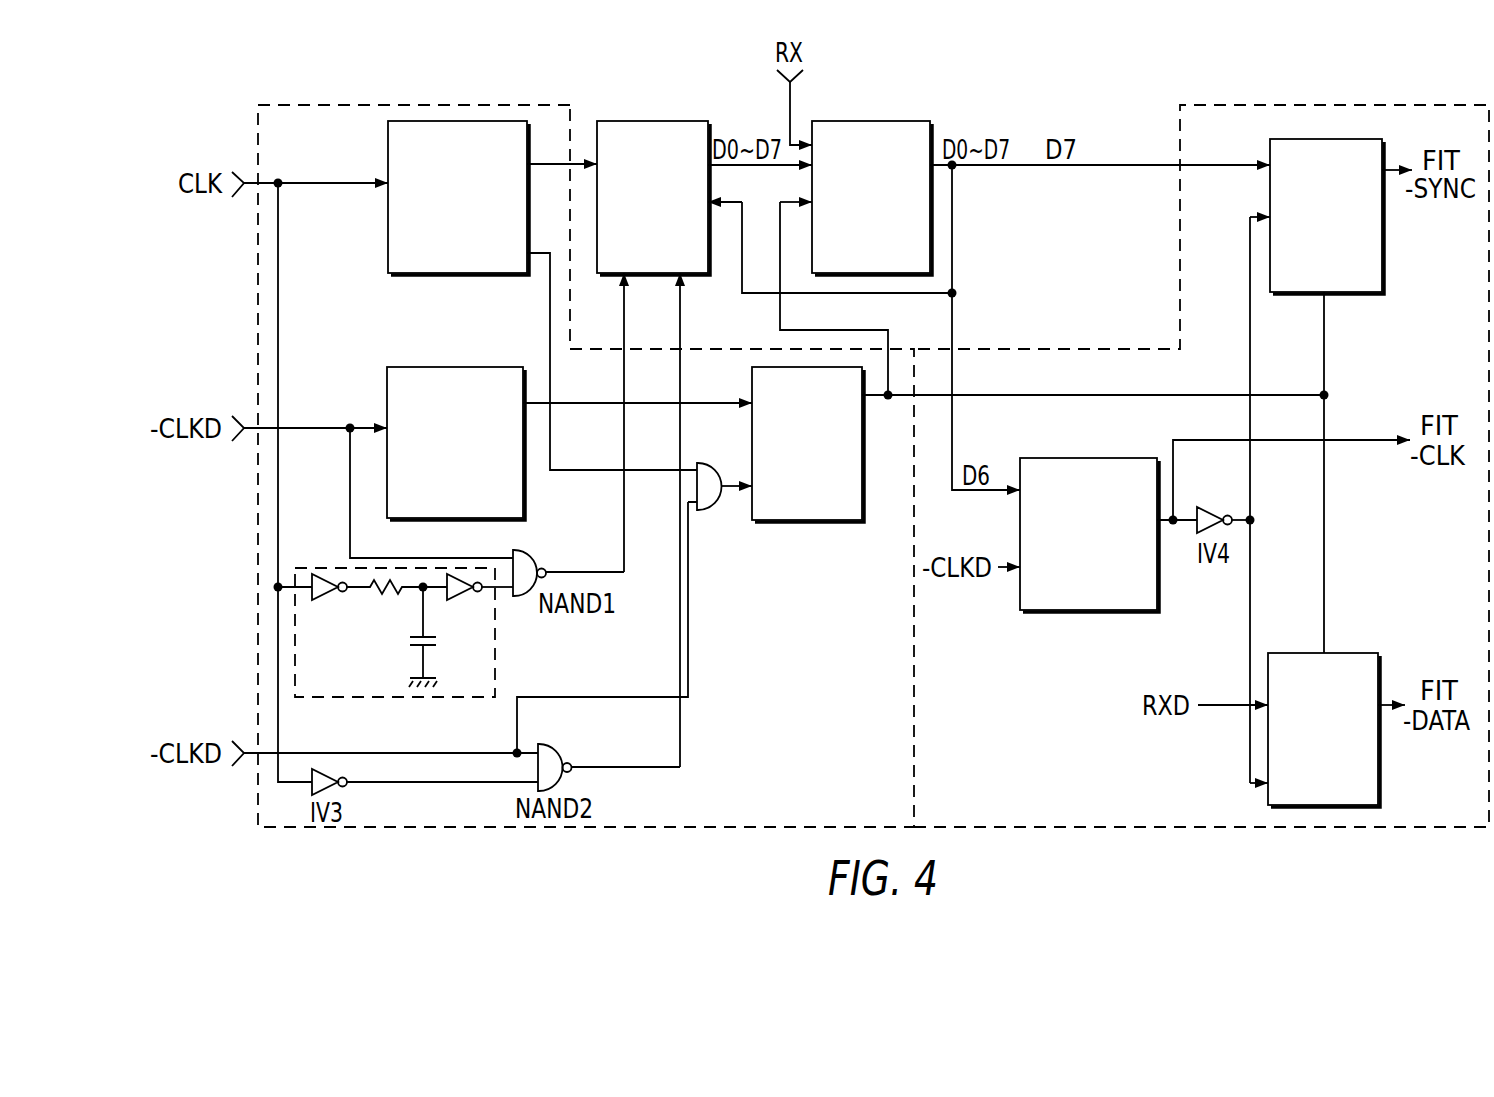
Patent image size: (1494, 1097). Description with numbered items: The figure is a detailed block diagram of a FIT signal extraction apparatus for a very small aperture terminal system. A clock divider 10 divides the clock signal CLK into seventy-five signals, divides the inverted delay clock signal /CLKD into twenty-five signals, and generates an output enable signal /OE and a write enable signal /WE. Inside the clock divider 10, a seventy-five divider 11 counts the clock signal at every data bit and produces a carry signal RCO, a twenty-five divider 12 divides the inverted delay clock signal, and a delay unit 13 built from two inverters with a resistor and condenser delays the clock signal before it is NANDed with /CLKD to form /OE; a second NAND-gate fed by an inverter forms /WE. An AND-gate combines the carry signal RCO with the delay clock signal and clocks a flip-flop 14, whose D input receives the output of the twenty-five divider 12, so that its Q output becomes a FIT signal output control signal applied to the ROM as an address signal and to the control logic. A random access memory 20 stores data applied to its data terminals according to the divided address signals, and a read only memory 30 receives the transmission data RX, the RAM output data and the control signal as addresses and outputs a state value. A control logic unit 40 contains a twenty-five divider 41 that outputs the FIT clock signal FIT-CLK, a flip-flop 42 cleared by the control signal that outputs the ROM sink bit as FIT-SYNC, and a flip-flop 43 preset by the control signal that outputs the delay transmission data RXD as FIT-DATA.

The clock divider 10 is at (453, 120).
The divider-75 11 is at (388, 150).
The divider-25 12 is at (387, 398).
The delay unit 13 is at (488, 662).
The flip-flop 14 is at (810, 522).
The random access memory (RAM) 20 is at (652, 120).
The read only memory (ROM) 30 is at (862, 120).
The control logic unit 40 is at (1330, 112).
The divider-25 41 is at (1070, 612).
The flip-flop 42 is at (1383, 258).
The flip-flop 43 is at (1380, 785).